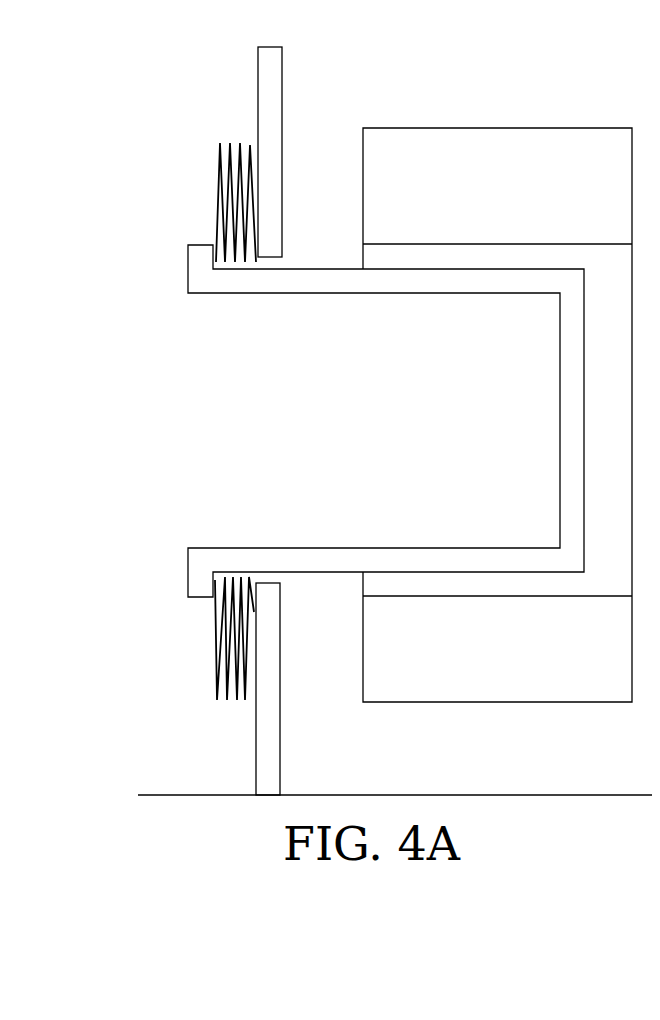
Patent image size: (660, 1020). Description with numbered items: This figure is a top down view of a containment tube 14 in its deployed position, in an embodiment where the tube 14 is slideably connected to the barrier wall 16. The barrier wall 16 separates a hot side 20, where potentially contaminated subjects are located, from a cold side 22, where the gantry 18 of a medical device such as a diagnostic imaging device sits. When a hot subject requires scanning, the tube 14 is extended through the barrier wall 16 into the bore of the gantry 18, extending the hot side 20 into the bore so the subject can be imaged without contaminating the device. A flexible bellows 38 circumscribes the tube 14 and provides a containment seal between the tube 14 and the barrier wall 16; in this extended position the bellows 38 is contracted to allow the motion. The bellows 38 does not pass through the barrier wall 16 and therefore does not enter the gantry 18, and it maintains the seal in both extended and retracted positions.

The containment tube 14 is at (473, 293).
The barrier wall 16 is at (283, 100).
The gantry 18 is at (548, 127).
The hot side 20 is at (179, 432).
The cold side 22 is at (435, 94).
The flexible bellows 38 is at (242, 143).